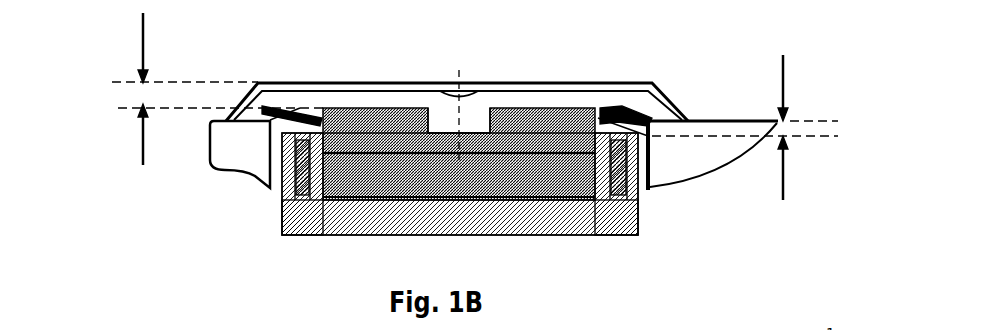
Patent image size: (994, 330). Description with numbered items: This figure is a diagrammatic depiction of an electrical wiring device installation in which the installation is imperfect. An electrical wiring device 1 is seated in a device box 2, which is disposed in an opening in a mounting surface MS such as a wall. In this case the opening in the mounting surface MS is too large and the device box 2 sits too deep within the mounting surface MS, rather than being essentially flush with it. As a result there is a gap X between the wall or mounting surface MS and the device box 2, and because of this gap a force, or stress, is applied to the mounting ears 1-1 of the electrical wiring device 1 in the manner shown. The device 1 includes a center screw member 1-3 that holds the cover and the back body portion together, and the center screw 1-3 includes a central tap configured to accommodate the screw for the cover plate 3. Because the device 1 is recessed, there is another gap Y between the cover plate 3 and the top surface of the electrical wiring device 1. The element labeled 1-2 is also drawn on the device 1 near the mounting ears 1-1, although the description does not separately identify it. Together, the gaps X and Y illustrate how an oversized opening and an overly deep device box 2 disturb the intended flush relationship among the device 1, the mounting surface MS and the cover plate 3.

The electrical wiring device 1 is at (402, 94).
The mounting ears 1-1 is at (637, 112).
The latching protrusion 1-2 is at (612, 108).
The center screw member 1-3 is at (460, 122).
The device box 2 is at (595, 222).
The cover plate 3 is at (316, 82).
The mounting surface MS is at (693, 118).
The gap x X is at (806, 128).
The gap y Y is at (143, 98).